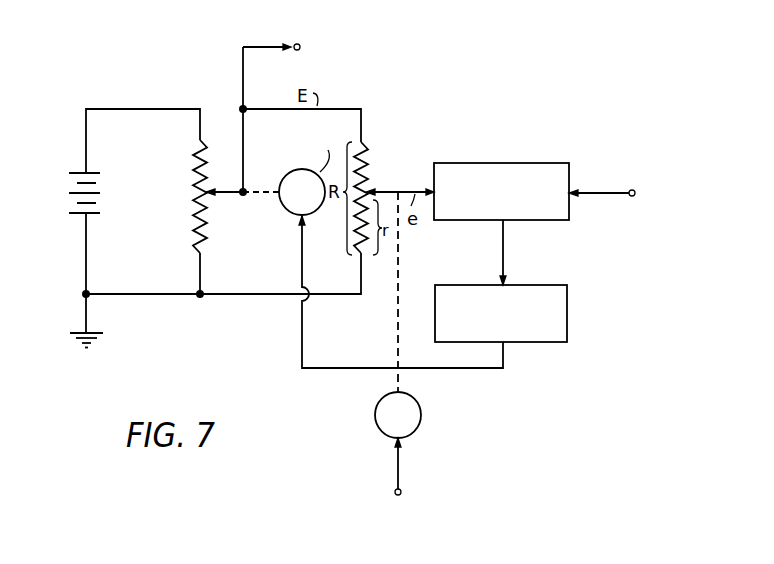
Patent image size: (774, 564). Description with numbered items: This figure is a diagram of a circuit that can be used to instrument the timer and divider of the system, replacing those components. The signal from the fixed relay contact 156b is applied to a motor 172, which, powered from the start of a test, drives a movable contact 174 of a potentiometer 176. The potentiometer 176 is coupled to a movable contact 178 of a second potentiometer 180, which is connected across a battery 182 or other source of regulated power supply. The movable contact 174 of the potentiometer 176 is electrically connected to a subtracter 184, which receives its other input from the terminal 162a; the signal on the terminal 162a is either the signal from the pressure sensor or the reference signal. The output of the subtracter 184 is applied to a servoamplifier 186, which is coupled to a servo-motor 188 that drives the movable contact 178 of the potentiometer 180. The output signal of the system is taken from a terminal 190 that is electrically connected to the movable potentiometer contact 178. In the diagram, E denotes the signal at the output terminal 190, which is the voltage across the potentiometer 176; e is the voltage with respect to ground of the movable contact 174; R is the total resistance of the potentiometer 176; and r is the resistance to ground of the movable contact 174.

The terminal 190 is at (299, 42).
The battery 182 is at (65, 187).
The movable contact 178 is at (216, 195).
The second potentiometer 180 is at (211, 236).
The servo-motor 188 is at (284, 212).
The potentiometer 176 is at (376, 144).
The movable contact 174 is at (375, 192).
The subtracter 184 is at (535, 151).
The terminal 162a is at (664, 214).
The servoamplifier 186 is at (567, 326).
The motor 172 is at (418, 403).
The fixed relay contact 156b is at (401, 490).